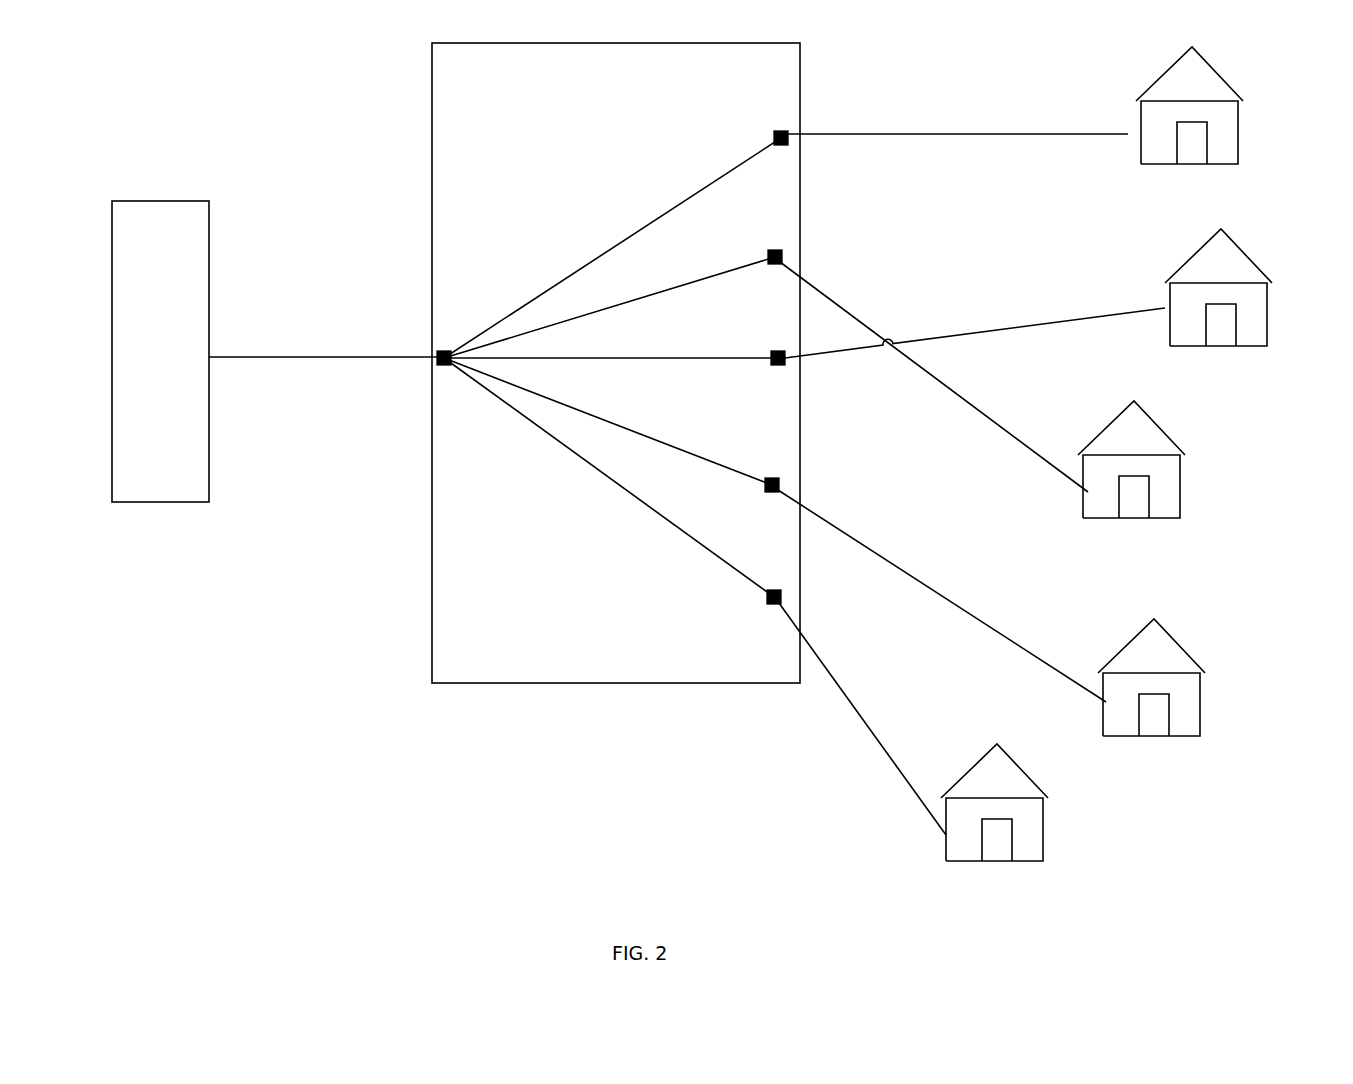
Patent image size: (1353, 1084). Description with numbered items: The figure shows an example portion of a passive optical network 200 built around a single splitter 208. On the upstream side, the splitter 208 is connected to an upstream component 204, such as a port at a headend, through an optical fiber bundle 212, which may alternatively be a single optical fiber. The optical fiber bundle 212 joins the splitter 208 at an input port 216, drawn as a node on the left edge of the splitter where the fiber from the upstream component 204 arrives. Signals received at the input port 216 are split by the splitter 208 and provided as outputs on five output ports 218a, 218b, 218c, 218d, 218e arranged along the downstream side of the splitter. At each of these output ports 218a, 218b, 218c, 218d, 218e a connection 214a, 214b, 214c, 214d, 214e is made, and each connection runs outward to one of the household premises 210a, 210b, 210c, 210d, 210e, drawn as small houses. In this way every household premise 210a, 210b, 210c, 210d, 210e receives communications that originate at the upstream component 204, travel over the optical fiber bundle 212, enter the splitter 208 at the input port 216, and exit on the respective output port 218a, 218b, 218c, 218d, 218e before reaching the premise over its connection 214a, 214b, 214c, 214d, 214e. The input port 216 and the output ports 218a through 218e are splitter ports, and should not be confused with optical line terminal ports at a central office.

The passive optical network 200 is at (702, 473).
The upstream component 204 is at (160, 370).
The splitter 208 is at (616, 380).
The optical fiber bundle 212 is at (326, 371).
The input port 216 is at (444, 350).
The output port 218a is at (774, 589).
The output port 218b is at (772, 477).
The output port 218c is at (778, 350).
The output port 218d is at (775, 249).
The output port 218e is at (781, 130).
The connection 214a is at (862, 719).
The connection 214b is at (942, 596).
The connection 214c is at (934, 377).
The connection 214d is at (975, 333).
The connection 214e is at (958, 147).
The household premise 210a is at (1045, 802).
The household premise 210b is at (1188, 677).
The household premise 210c is at (1156, 466).
The household premise 210d is at (1229, 304).
The household premise 210e is at (1214, 115).